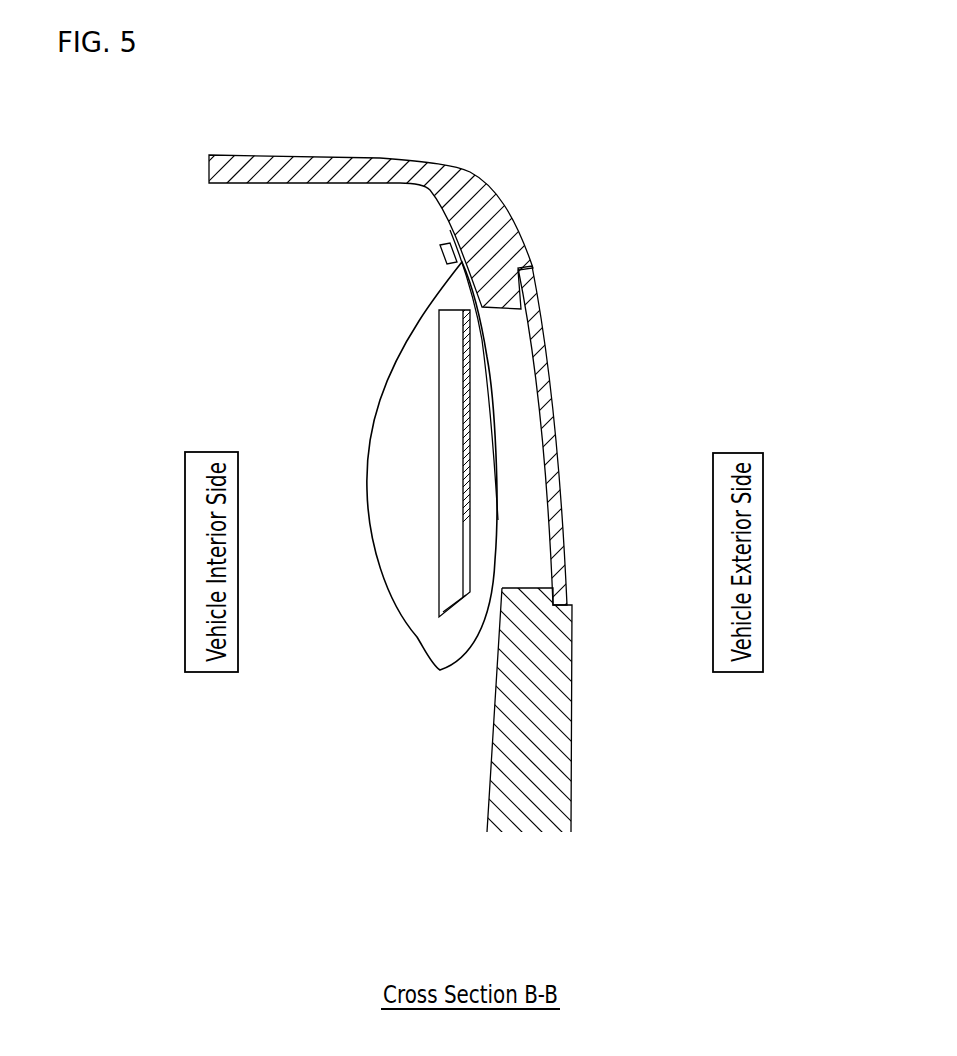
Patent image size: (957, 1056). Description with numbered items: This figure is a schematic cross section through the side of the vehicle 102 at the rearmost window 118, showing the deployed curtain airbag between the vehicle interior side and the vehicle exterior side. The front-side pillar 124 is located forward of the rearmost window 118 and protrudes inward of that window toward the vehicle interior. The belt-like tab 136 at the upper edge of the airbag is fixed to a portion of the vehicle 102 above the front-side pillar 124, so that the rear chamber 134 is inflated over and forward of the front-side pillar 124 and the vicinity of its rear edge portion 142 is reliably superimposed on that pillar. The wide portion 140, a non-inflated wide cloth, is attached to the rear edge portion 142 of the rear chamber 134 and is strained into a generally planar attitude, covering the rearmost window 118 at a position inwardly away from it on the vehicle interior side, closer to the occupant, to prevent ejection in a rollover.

The vehicle 102 is at (510, 180).
The rearmost window 118 is at (548, 377).
The front-side pillar 124 is at (530, 505).
The rear chamber 134 is at (395, 372).
The tab 136 is at (440, 236).
The wide portion 140 is at (450, 507).
The rear edge portion 142 is at (439, 440).